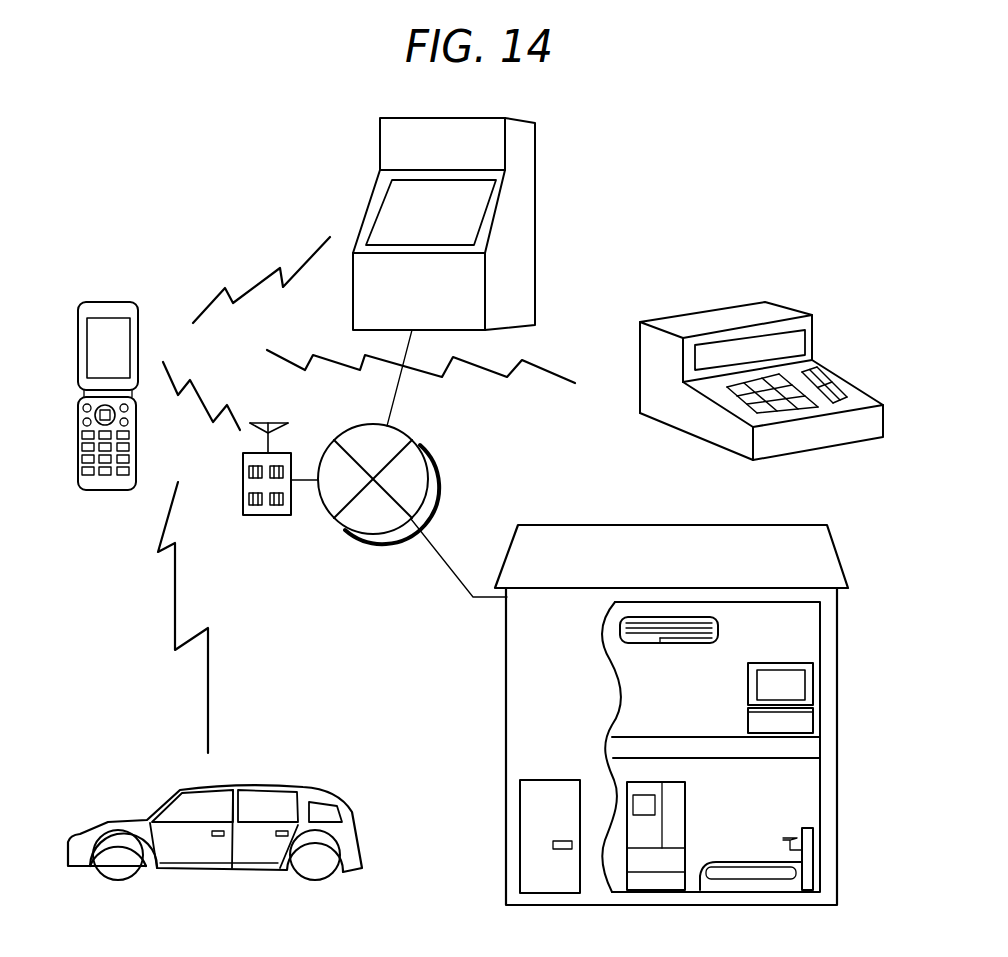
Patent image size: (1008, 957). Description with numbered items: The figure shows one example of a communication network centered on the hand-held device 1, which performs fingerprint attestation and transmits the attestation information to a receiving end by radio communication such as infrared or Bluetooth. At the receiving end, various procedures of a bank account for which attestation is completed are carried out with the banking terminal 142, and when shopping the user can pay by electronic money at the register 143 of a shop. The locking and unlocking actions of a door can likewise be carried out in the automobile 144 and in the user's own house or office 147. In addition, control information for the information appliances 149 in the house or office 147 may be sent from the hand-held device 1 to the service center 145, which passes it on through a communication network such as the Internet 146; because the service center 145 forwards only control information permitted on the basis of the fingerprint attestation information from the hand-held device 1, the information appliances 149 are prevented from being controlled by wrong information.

The hand-held device 1 is at (116, 302).
The banking terminal 142 is at (380, 144).
The register 143 is at (675, 315).
The automobile 144 is at (135, 800).
The service center 145 is at (268, 516).
The Internet 146 is at (373, 535).
The user's own house or office 147 is at (506, 706).
The information appliances 149 is at (793, 665).